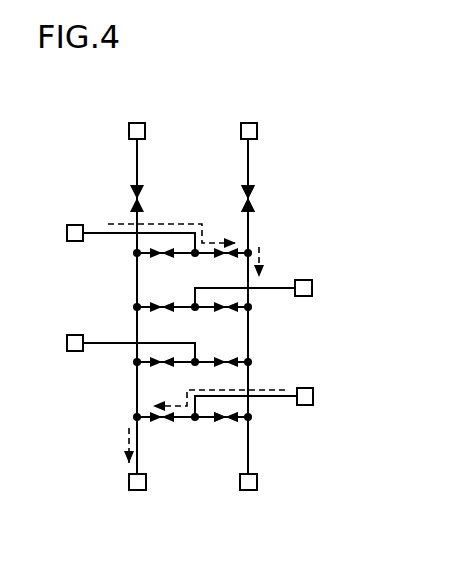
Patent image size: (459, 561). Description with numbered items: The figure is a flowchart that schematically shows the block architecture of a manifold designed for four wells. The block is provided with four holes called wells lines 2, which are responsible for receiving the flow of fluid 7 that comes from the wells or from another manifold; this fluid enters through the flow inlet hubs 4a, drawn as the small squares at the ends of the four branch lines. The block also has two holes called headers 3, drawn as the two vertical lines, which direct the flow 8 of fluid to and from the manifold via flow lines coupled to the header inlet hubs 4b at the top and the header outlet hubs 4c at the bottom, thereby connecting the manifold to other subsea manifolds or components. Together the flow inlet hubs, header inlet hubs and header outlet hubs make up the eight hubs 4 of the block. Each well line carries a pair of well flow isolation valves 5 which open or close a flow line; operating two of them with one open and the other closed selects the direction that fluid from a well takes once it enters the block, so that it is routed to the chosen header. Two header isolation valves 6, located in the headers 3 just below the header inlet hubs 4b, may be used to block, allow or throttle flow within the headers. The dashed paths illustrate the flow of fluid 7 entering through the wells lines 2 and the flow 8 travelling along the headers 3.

The wells lines 2 is at (96, 239).
The headers 3 is at (241, 176).
The hubs 4 is at (236, 117).
The flow inlet hubs 4a is at (66, 346).
The header inlet hubs 4b is at (257, 127).
The header outlet hubs 4c is at (257, 482).
The well flow isolation valves 5 is at (222, 424).
The header isolation valves 6 is at (257, 197).
The flow of fluid 7 is at (121, 224).
The flow 8 is at (127, 438).